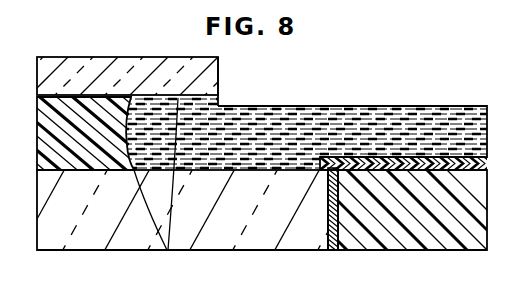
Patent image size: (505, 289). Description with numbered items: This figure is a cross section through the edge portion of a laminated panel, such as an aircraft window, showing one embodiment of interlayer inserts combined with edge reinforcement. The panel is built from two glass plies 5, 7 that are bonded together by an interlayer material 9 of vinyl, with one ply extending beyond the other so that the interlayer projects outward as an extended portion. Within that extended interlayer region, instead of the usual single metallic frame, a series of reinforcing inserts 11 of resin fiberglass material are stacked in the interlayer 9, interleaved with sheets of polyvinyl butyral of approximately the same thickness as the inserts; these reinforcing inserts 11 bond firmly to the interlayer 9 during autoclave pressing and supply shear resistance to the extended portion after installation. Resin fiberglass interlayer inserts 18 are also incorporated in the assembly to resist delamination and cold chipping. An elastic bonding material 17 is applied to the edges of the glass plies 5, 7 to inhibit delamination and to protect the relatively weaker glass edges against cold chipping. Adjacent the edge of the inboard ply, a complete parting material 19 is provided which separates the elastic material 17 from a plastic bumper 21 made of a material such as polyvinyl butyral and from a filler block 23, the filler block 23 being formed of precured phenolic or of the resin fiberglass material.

The glass ply 5 is at (38, 73).
The glass ply 7 is at (38, 203).
The interlayer material 9 is at (38, 119).
The reinforcing inserts 11 is at (430, 120).
The elastic bonding material 17 is at (219, 70).
The interlayer inserts 18 is at (167, 250).
The parting material 19 is at (332, 250).
The plastic bumper 21 is at (338, 238).
The filler block 23 is at (434, 245).